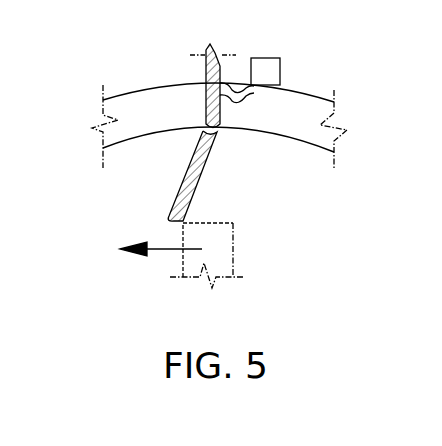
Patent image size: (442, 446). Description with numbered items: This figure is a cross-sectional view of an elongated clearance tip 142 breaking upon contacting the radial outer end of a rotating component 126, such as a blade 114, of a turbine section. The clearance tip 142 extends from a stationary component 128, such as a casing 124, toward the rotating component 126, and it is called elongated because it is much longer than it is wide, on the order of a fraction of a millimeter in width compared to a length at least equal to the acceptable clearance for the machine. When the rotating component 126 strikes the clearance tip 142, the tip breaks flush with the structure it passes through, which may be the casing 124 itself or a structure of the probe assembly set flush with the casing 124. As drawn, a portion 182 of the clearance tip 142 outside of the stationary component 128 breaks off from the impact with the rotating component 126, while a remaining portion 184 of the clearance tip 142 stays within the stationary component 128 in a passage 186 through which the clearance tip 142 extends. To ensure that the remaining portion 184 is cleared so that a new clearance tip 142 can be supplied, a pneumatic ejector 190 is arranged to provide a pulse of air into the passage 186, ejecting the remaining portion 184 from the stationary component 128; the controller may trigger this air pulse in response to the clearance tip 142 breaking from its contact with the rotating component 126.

The blade 114 is at (250, 257).
The rotating component 126 is at (218, 250).
The casing 124 is at (259, 144).
The stationary component 128 is at (315, 133).
The elongated clearance tip 142 is at (178, 141).
The portion of clearance tip 182 is at (193, 178).
The remaining portion of clearance tip 184 is at (207, 98).
The passage 186 is at (207, 101).
The pneumatic ejector 190 is at (272, 67).